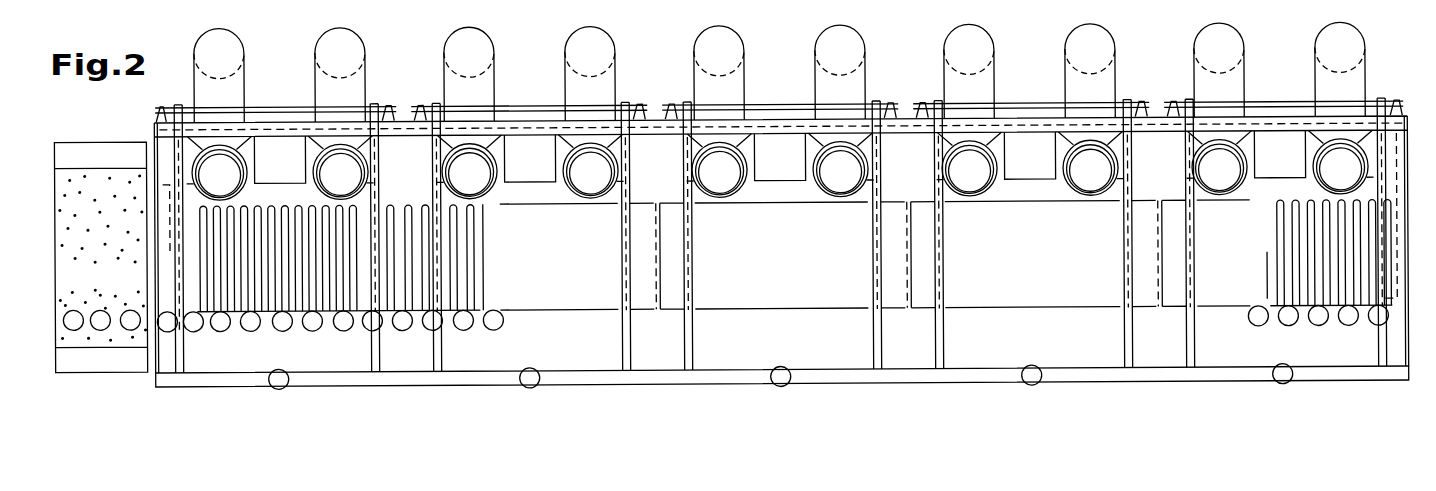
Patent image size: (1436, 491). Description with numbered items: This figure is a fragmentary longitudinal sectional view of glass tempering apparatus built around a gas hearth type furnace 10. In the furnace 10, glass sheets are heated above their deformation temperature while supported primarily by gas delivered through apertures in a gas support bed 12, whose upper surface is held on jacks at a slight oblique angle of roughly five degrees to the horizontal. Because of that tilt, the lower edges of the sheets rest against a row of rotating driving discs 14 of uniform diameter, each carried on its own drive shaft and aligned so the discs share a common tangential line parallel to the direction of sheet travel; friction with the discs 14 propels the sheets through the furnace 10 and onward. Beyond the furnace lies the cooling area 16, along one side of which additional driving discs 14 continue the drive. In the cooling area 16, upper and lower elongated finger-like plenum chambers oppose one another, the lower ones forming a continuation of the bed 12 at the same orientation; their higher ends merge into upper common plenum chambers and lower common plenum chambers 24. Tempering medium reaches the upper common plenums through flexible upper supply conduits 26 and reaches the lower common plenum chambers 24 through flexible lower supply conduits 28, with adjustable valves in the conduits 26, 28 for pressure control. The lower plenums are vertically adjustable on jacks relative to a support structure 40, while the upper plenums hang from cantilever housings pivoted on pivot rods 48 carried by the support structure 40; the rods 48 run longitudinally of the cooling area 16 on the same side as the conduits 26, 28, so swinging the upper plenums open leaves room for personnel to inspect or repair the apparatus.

The gas hearth type furnace 10 is at (112, 134).
The gas support bed 12 is at (107, 331).
The rotating driving discs 14 is at (200, 327).
The cooling area 16 is at (297, 20).
The lower common plenum chamber 24 is at (272, 163).
The flexible upper supply conduits 26 is at (444, 165).
The flexible lower supply conduits 28 is at (445, 52).
The support structure 40 is at (698, 393).
The pivot rods 48 is at (283, 108).